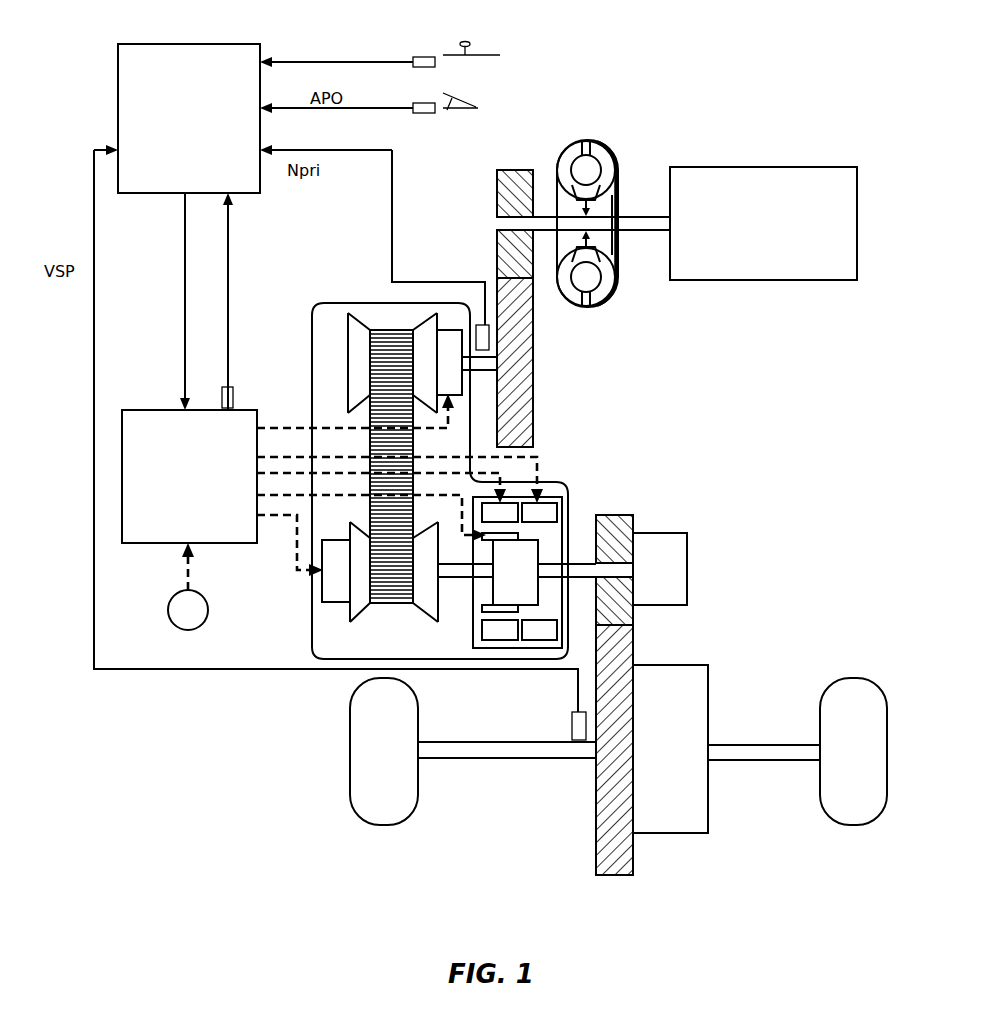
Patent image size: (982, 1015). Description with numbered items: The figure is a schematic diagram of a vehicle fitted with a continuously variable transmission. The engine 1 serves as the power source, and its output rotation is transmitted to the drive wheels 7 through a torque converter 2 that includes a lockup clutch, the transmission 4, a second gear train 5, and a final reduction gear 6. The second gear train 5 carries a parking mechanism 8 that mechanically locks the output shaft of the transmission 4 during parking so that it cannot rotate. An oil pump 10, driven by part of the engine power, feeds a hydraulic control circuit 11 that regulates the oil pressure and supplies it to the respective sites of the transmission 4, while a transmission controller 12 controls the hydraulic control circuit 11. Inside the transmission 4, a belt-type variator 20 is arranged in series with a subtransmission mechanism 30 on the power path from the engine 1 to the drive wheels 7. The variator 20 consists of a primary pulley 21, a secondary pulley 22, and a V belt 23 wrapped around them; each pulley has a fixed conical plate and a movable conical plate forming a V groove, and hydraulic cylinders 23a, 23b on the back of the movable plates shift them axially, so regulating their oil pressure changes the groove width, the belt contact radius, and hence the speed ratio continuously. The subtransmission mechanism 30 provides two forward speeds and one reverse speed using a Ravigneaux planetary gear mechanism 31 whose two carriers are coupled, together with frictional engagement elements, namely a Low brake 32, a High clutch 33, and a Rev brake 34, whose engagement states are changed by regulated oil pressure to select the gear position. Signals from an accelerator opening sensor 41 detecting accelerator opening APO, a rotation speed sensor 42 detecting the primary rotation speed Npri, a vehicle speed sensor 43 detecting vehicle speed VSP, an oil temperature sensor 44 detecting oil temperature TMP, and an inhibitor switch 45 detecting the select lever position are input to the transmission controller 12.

The engine 1 is at (845, 181).
The torque converter 2 is at (612, 182).
The transmission 4 is at (404, 442).
The second gear train 5 is at (620, 888).
The final reduction gear 6 is at (670, 821).
The drive wheels 7 is at (383, 810).
The parking mechanism 8 is at (672, 560).
The oil pump 10 is at (168, 602).
The hydraulic control circuit 11 is at (140, 416).
The transmission controller 12 is at (250, 51).
The variator 20 is at (328, 331).
The primary pulley 21 is at (358, 362).
The secondary pulley 22 is at (363, 588).
The V belt 23 is at (395, 329).
The hydraulic cylinder 23a is at (447, 343).
The hydraulic cylinder 23b is at (327, 578).
The subtransmission mechanism 30 is at (544, 535).
The Ravigneaux planetary gear mechanism 31 is at (518, 565).
The Low brake 32 is at (500, 515).
The High clutch 33 is at (497, 612).
The Rev brake 34 is at (540, 515).
The accelerator opening sensor 41 is at (423, 114).
The rotation speed sensor 42 is at (482, 338).
The vehicle speed sensor 43 is at (576, 722).
The oil temperature sensor 44 is at (233, 397).
The inhibitor switch 45 is at (426, 57).